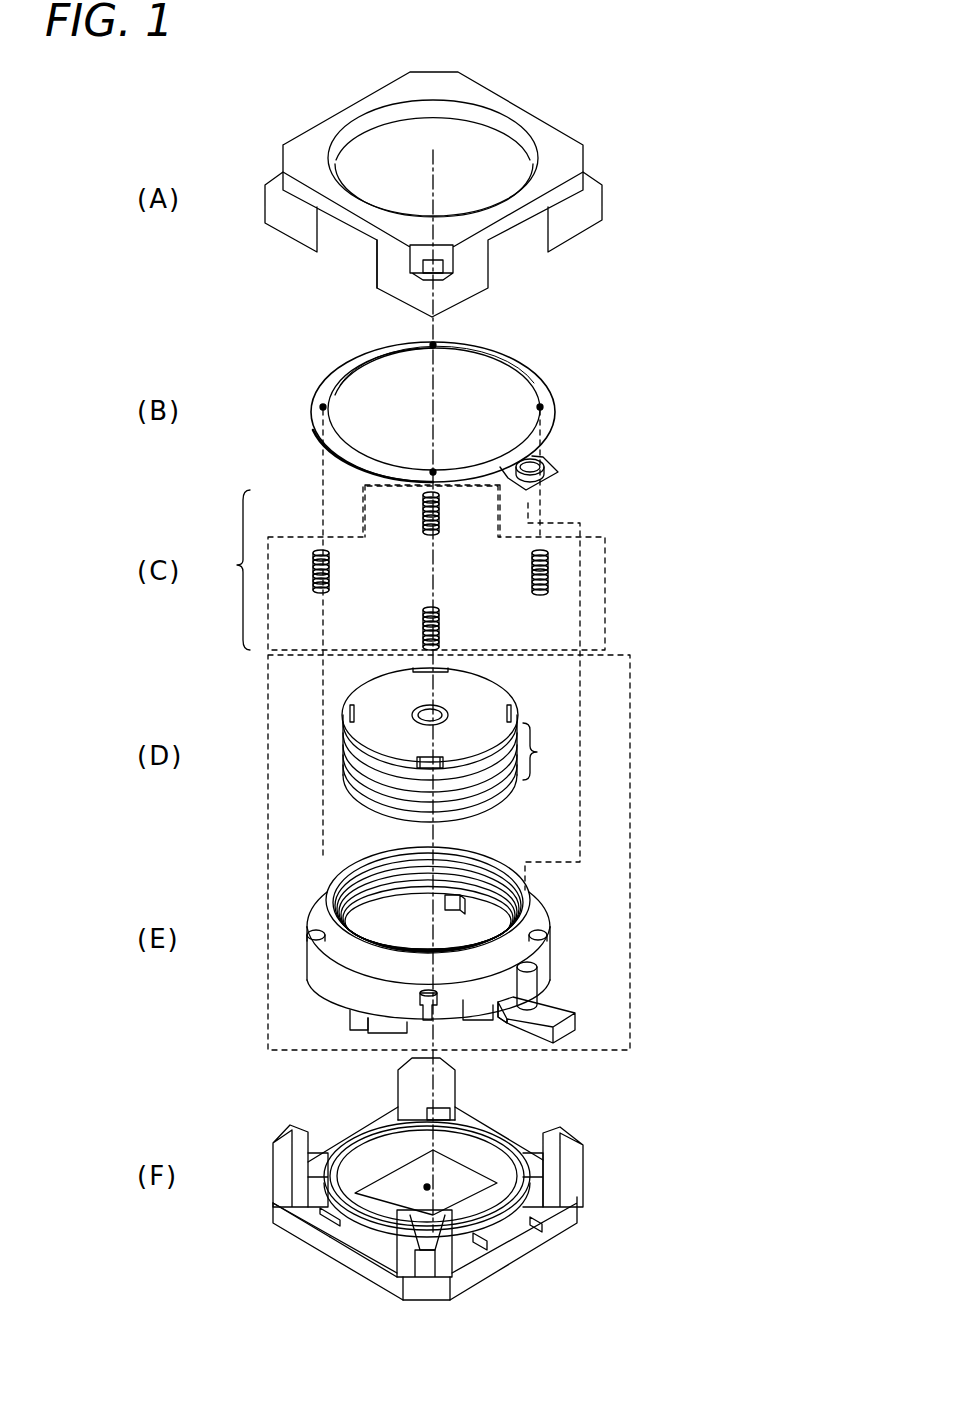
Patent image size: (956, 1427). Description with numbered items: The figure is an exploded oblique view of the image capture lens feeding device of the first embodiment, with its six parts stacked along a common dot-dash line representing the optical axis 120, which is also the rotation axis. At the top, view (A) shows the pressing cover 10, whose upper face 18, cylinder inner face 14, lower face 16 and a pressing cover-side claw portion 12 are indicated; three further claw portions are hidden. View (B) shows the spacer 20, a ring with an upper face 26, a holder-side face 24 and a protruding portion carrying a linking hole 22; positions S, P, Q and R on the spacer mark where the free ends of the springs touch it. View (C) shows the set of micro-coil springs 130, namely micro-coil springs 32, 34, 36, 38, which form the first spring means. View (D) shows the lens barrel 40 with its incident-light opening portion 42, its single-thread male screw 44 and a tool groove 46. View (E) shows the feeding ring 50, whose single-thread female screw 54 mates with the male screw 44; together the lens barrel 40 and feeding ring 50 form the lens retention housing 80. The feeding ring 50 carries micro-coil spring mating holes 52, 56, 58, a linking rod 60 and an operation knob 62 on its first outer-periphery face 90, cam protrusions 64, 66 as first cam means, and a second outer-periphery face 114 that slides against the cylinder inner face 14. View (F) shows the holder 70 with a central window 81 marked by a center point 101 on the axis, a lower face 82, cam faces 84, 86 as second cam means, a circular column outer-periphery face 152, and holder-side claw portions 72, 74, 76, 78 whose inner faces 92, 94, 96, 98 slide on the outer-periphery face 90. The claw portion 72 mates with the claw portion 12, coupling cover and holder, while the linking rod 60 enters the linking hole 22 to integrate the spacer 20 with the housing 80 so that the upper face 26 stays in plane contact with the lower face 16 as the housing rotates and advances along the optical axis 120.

The pressing cover 10 is at (562, 69).
The pressing cover-side claw portion 12 is at (433, 273).
The cylinder inner face 14 is at (389, 120).
The lower face of the pressing cover 16 is at (400, 233).
The upper face of the pressing cover 18 is at (563, 155).
The spacer 20 is at (563, 343).
The linking hole 22 is at (545, 460).
The face of the spacer on the holder side 24 is at (374, 375).
The upper face of the spacer 26 is at (330, 386).
The micro-coil spring 32 is at (532, 577).
The micro-coil spring 34 is at (440, 518).
The micro-coil spring 36 is at (331, 568).
The micro-coil spring 38 is at (421, 627).
The lens barrel 40 is at (532, 692).
The incident-light opening portion 42 is at (439, 706).
The single-thread male screw 44 is at (547, 749).
The groove 46 is at (422, 760).
The feeding ring 50 is at (578, 931).
The micro-coil spring mating hole 52 is at (540, 930).
The single-thread female screw 54 is at (478, 896).
The micro-coil spring mating hole 56 is at (312, 940).
The micro-coil spring mating hole 58 is at (437, 1008).
The linking rod 60 is at (546, 986).
The operation knob 62 is at (565, 1025).
The cam protrusion 64 is at (500, 1012).
The cam protrusion 66 is at (352, 1017).
The holder 70 is at (630, 1170).
The holder-side claw portion 72 is at (440, 1257).
The holder-side claw portion 74 is at (556, 1140).
The holder-side claw portion 76 is at (437, 1068).
The holder-side claw portion 78 is at (298, 1128).
The lens retention housing 80 is at (632, 690).
The window 81 is at (400, 1186).
The lower face of the holder 82 is at (337, 1268).
The cam face 84 is at (527, 1240).
The cam face 86 is at (276, 1223).
The first outer-periphery face of the feeding ring 90 is at (385, 1017).
The inner face of holder-side claw portion 92 is at (464, 1221).
The inner face of holder-side claw portion 94 is at (536, 1152).
The inner face of holder-side claw portion 96 is at (408, 1087).
The inner face of holder-side claw portion 98 is at (316, 1148).
The optical axis center 101 is at (430, 1186).
The second outer-periphery face of the feeding ring 114 is at (363, 970).
The optical axis 120 is at (435, 172).
The set of micro-coil springs 130 is at (605, 568).
The circular column outer-periphery face of the holder 152 is at (532, 1218).
The contact position on the spacer P is at (433, 348).
The contact position on the spacer Q is at (325, 407).
The contact position on the spacer R is at (435, 470).
The contact position on the spacer S is at (538, 407).